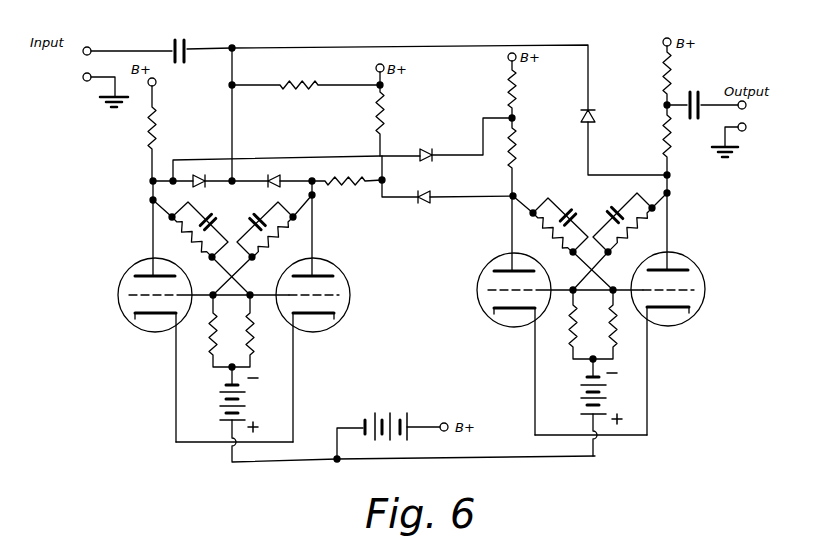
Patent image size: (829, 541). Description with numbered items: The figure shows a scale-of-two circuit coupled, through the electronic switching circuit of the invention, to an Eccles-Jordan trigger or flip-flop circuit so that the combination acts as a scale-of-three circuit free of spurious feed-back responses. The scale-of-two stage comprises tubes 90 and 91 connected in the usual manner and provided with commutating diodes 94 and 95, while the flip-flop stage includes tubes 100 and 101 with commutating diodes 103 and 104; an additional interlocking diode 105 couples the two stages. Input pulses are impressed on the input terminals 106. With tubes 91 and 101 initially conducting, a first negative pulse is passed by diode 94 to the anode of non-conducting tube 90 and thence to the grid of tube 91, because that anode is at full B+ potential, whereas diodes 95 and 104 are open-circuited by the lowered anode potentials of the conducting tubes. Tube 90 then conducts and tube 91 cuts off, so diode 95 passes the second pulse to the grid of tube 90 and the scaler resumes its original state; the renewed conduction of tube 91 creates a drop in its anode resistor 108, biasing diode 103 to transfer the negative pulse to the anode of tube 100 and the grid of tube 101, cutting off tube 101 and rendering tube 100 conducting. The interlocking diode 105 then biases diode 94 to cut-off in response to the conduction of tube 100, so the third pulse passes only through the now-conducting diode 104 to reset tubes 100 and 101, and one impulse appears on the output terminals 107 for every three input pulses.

The tube 90 is at (140, 331).
The tube 91 is at (331, 328).
The commutating diode 94 is at (206, 148).
The commutating diode 95 is at (271, 172).
The tube 100 is at (499, 327).
The tube 101 is at (690, 320).
The commutating diode 103 is at (424, 203).
The commutating diode 104 is at (587, 118).
The interlocking diode 105 is at (432, 150).
The input terminals 106 is at (83, 60).
The output terminals 107 is at (746, 129).
The anode resistor 108 is at (373, 118).